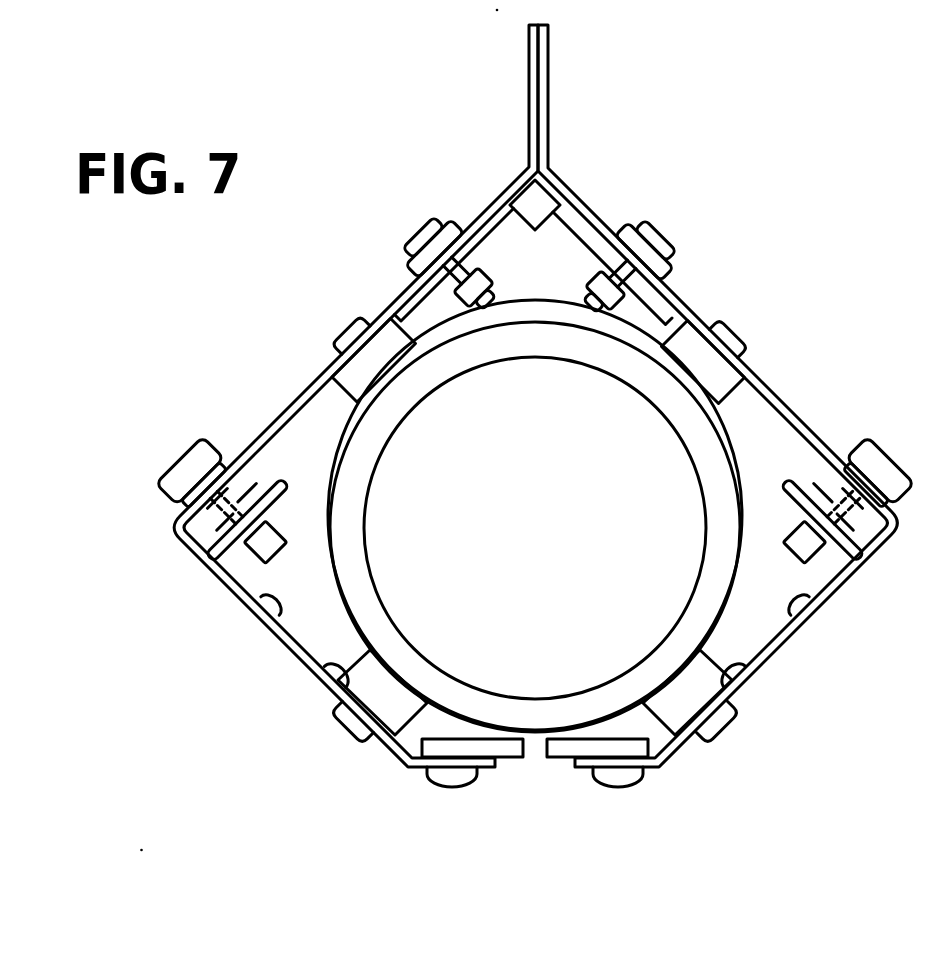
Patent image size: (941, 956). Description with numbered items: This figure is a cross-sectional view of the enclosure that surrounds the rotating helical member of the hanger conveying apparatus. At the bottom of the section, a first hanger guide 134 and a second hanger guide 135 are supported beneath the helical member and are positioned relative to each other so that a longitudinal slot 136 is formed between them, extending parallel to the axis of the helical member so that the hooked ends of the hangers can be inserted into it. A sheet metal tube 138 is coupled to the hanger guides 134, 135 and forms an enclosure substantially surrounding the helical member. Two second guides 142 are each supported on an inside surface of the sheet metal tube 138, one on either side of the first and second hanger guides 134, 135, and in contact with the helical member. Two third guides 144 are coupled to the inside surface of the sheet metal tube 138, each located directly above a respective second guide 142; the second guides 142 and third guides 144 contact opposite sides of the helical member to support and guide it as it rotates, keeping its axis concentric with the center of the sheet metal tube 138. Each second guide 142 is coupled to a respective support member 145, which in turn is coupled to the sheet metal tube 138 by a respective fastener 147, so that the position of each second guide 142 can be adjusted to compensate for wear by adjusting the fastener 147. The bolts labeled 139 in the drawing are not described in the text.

The first hanger guide 134 is at (505, 762).
The second hanger guide 135 is at (560, 762).
The longitudinal slot 136 is at (532, 770).
The sheet metal tube 138 is at (562, 38).
The upper bolts 139 is at (418, 243).
The second guide 142 is at (323, 677).
The third guide 144 is at (340, 393).
The support member 145 is at (262, 612).
The fastener 147 is at (190, 457).